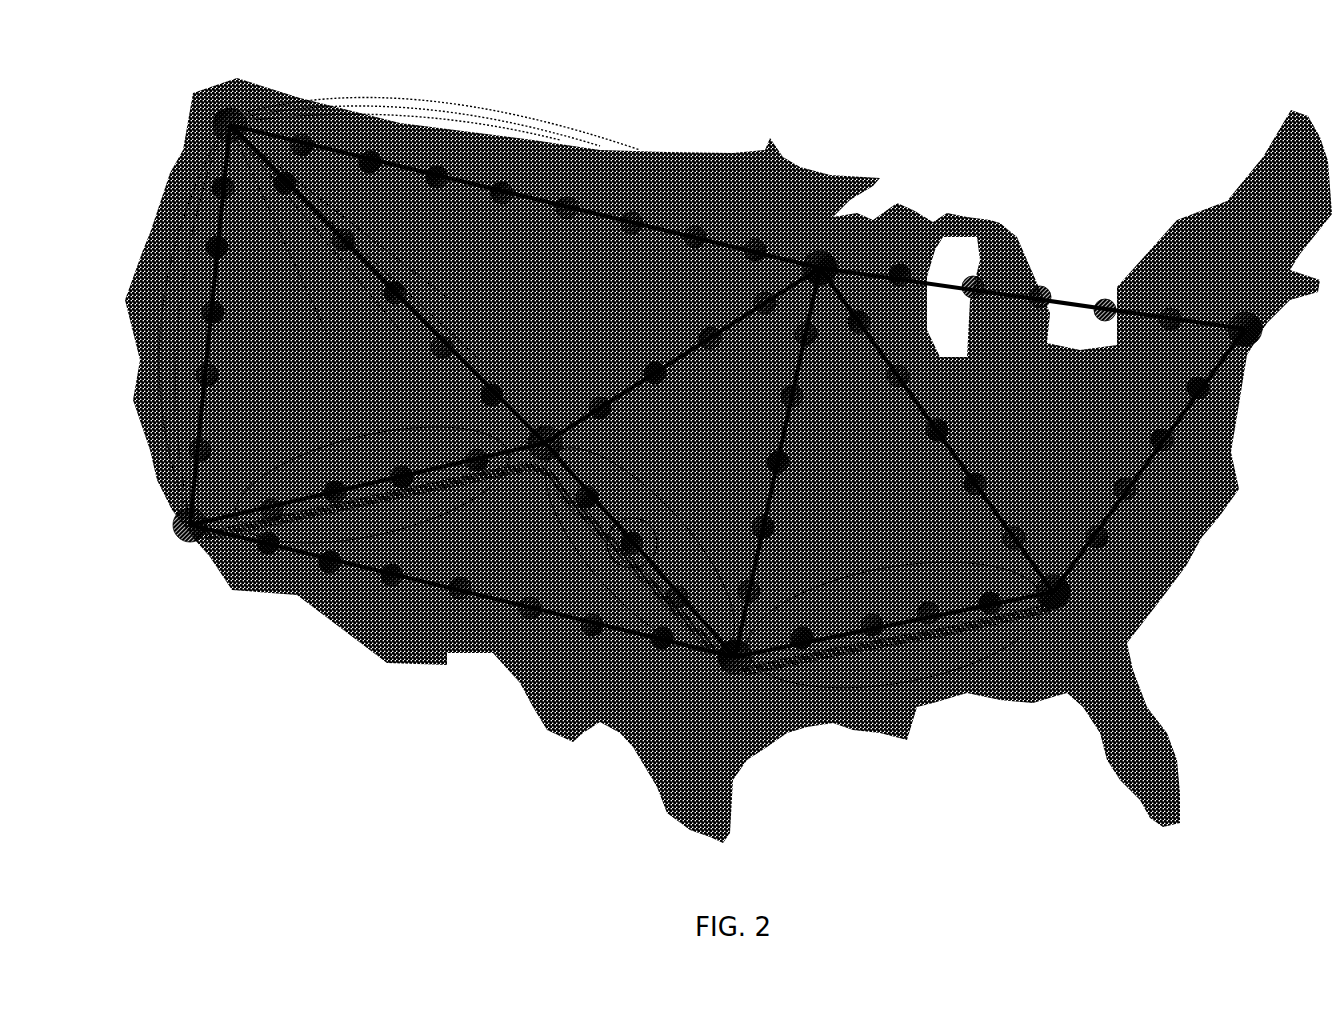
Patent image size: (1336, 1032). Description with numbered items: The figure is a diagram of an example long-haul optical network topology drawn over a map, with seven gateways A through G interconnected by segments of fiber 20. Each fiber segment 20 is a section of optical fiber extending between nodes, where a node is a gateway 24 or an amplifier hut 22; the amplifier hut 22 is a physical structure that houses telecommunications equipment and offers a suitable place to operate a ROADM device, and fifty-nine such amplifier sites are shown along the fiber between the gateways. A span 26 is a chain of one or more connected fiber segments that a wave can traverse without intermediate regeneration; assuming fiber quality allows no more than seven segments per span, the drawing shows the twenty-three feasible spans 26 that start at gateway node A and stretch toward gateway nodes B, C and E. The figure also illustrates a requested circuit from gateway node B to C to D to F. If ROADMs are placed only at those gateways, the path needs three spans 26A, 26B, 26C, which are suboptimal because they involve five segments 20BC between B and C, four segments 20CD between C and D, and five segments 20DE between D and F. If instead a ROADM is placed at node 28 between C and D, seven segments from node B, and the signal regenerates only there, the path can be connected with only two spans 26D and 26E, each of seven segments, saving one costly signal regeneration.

The fiber segment 20 is at (720, 247).
The amplifier hut 22 is at (370, 160).
The gateway 24 is at (222, 112).
The span 26 is at (318, 85).
The segments between gateway nodes B and C 20BC is at (490, 443).
The segments between gateway nodes C and D 20CD is at (613, 512).
The segments between gateway nodes D and F 20DE is at (992, 566).
The span from gateway node B to gateway node C 26A is at (367, 545).
The span from gateway node C to gateway node D 26B is at (502, 550).
The span from gateway node D to gateway node F 26C is at (900, 652).
The span 26D is at (462, 559).
The span 26E is at (967, 676).
The node 28 is at (638, 570).